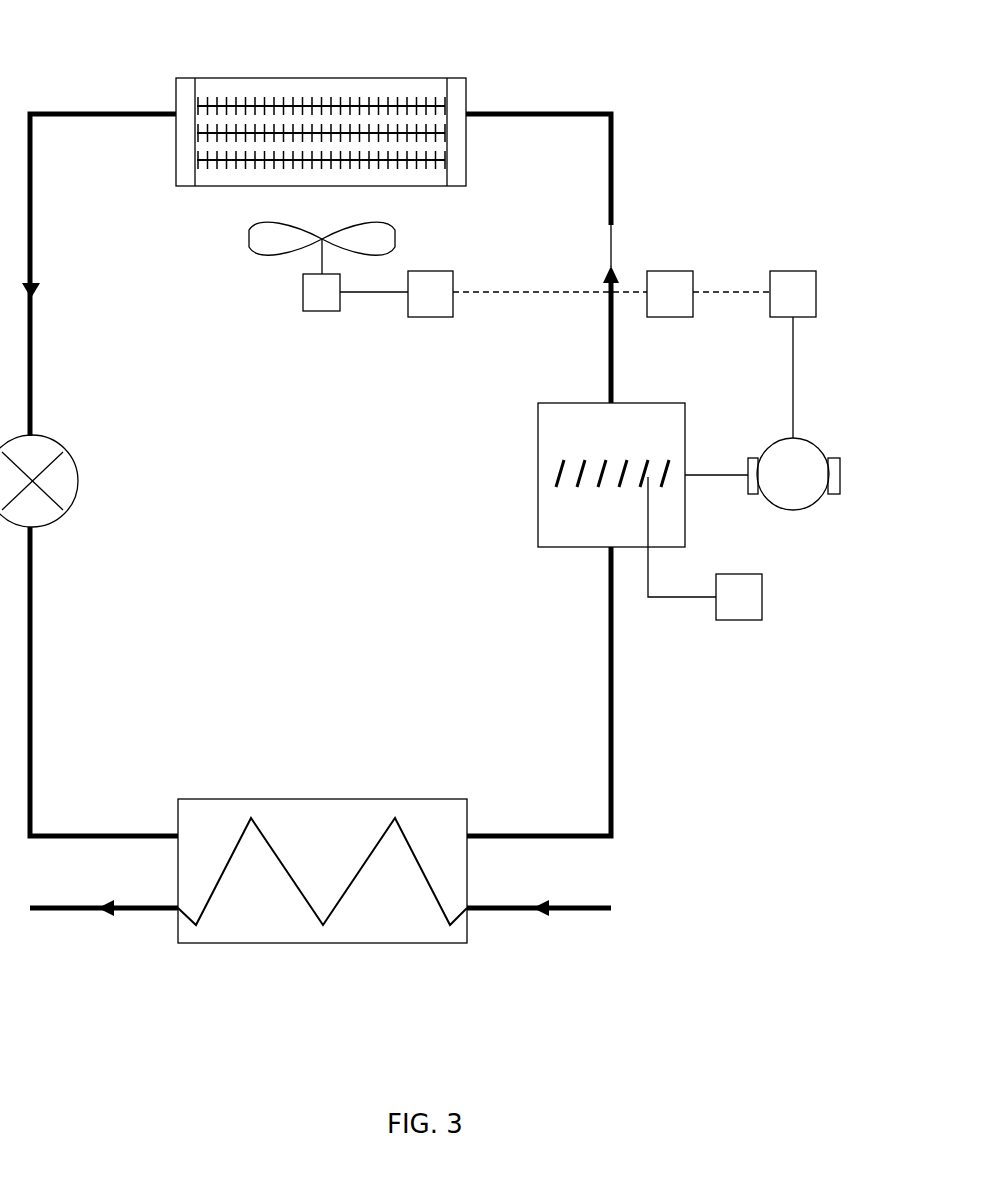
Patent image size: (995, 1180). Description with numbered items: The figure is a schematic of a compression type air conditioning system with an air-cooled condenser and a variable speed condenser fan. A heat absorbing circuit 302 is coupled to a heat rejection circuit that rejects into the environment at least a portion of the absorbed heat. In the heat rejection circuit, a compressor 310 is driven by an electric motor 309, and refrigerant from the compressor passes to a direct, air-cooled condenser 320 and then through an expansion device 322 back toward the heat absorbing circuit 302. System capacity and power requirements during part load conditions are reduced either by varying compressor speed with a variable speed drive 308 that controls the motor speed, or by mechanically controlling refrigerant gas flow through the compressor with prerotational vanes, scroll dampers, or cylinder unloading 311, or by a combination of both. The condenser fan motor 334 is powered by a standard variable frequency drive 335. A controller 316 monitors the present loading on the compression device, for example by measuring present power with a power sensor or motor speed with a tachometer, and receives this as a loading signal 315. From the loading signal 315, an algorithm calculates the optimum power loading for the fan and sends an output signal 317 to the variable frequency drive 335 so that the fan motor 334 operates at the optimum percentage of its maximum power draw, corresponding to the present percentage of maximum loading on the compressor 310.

The heat absorbing circuit 302 is at (338, 799).
The variable speed drive 308 is at (803, 267).
The electric motor 309 is at (805, 512).
The compressor 310 is at (530, 477).
The cylinder unloading 311 is at (748, 628).
The loading signal 315 is at (718, 292).
The controller 316 is at (673, 267).
The output signal 317 is at (520, 292).
The air-cooled condenser 320 is at (356, 78).
The expansion valve 322 is at (68, 457).
The condenser fan motor 334 is at (295, 303).
The variable frequency drive 335 is at (420, 322).